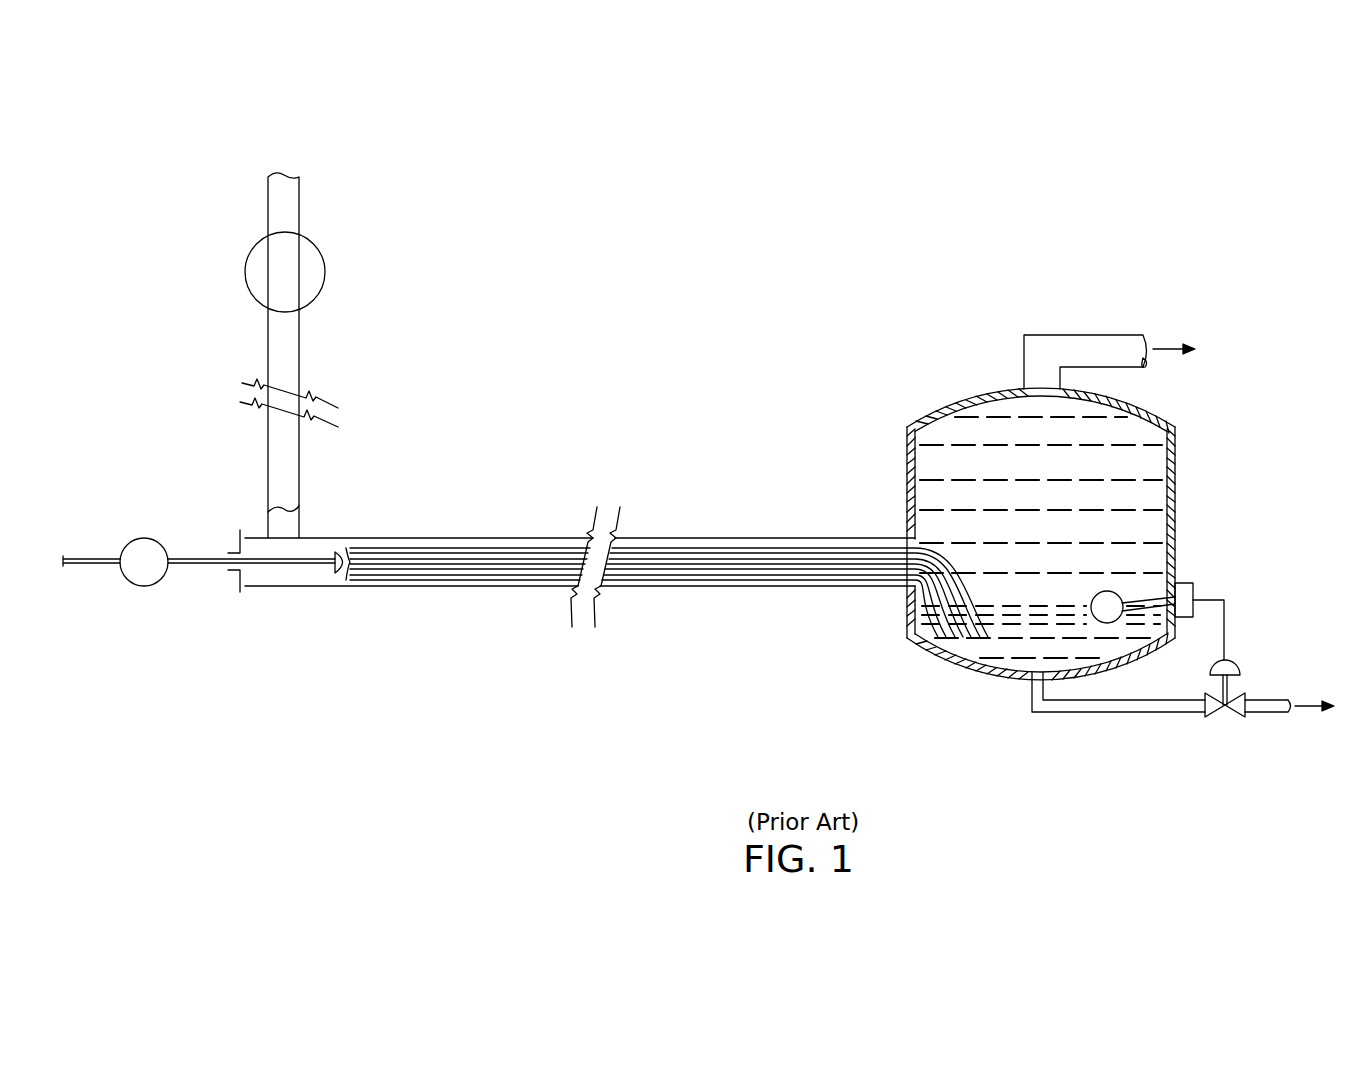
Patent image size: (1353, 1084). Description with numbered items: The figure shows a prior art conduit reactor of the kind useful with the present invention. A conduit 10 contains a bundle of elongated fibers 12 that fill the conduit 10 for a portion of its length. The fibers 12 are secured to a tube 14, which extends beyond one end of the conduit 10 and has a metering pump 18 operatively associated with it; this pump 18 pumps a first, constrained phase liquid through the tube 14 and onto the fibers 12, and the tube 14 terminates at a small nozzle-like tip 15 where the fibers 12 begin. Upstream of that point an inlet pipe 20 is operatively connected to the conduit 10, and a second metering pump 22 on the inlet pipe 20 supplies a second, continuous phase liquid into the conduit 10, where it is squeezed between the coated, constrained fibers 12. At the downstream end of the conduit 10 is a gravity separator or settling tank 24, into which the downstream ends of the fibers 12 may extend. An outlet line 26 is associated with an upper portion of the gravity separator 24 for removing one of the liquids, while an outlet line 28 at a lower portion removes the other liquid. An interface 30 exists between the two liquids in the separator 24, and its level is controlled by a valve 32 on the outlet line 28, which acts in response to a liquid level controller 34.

The conduit 10 is at (485, 537).
The bundle of elongated fibers 12 is at (533, 573).
The tube 14 is at (83, 557).
The nozzle 15 is at (338, 576).
The metering pump 18 is at (146, 537).
The inlet pipe 20 is at (300, 370).
The metering pump 22 is at (325, 272).
The gravity separator 24 is at (1177, 462).
The outlet line 26 is at (1108, 334).
The outlet line 28 is at (1265, 714).
The interface 30 is at (1022, 605).
The valve 32 is at (1233, 662).
The liquid level controller 34 is at (1190, 583).